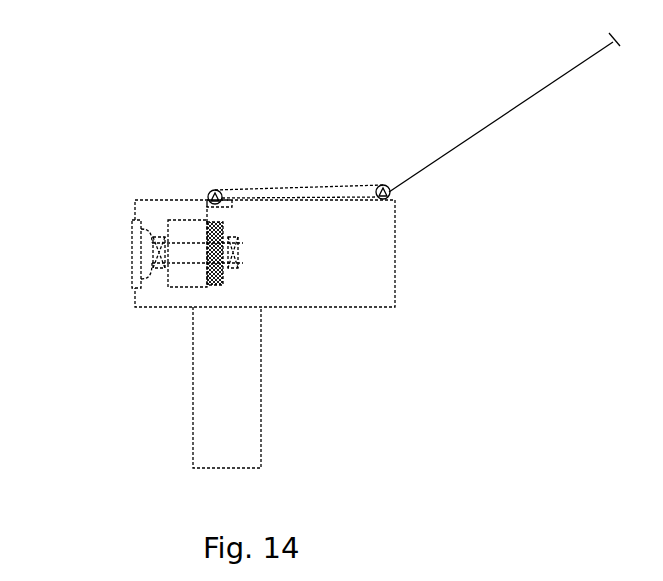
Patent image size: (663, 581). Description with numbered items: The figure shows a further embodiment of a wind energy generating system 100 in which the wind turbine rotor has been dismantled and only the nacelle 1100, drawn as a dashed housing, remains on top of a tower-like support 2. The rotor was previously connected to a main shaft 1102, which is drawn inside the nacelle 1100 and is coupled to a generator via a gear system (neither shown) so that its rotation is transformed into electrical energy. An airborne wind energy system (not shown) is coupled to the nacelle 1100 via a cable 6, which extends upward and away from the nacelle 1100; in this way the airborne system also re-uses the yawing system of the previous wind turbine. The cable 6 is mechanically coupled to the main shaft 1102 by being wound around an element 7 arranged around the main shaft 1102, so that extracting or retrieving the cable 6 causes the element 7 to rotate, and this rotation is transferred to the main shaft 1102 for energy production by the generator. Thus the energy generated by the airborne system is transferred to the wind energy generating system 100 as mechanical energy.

The wind energy generating system 100 is at (118, 100).
The nacelle 1100 is at (365, 288).
The main shaft 1102 is at (225, 250).
The element 7 is at (182, 232).
The pump stem / riser 2 is at (235, 404).
The cable 6 is at (475, 137).